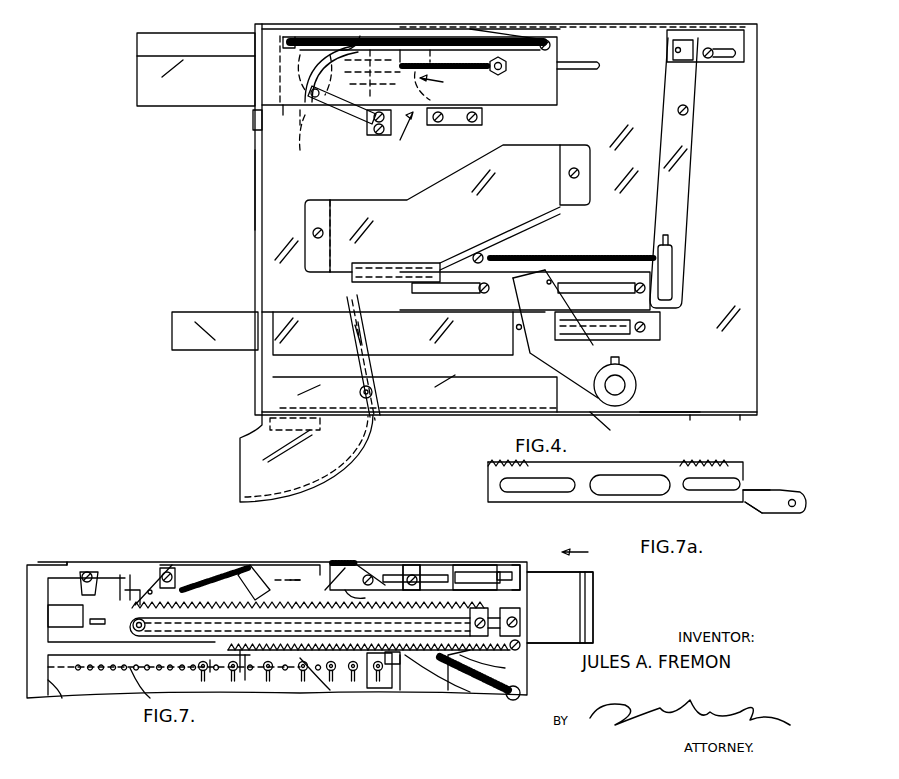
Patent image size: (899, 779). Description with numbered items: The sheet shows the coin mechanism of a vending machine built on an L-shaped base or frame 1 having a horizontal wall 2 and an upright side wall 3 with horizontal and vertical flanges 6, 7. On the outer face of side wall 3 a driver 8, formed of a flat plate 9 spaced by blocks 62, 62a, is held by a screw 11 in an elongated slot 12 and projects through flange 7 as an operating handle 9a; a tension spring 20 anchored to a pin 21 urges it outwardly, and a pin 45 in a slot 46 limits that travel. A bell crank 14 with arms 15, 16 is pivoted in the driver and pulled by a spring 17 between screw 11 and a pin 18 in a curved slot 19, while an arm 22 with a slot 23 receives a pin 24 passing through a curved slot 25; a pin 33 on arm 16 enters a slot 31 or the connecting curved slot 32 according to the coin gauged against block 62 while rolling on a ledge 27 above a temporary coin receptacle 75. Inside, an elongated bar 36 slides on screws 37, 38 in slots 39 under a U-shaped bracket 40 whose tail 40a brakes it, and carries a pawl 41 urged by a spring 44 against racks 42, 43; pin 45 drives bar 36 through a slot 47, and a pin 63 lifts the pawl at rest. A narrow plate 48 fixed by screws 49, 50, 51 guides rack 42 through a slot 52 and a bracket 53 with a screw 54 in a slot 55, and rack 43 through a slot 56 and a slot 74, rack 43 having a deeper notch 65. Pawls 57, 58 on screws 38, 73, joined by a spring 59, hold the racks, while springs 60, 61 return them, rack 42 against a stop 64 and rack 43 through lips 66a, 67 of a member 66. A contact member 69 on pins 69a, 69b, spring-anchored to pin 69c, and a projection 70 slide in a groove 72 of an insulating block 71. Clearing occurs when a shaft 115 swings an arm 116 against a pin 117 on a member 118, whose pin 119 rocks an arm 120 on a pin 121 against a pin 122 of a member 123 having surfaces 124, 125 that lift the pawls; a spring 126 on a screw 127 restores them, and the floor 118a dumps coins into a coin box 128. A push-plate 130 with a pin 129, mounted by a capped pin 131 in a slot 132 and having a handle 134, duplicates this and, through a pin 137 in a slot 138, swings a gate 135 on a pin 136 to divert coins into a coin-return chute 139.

In FIG. 4, the base or frame 1 is at (245, 182).
In FIG. 4, the horizontal wall 2 is at (652, 412).
In FIG. 4, the side wall 3 is at (752, 140).
In FIG. 4, the horizontal flange 6 is at (358, 37).
In FIG. 4, the vertical flange 7 is at (250, 70).
In FIG. 7, the vertical flange 7 is at (575, 545).
In FIG. 4, the driver 8 is at (403, 142).
In FIG. 4, the flat plate 9 is at (320, 40).
In FIG. 4, the operating handle 9a is at (157, 45).
In FIG. 7, the operating handle 9a is at (597, 600).
In FIG. 4, the screw 11 is at (507, 68).
In FIG. 4, the elongated slot 12 is at (578, 66).
In FIG. 4, the bell crank 14 is at (443, 86).
In FIG. 4, the arm 15 is at (428, 44).
In FIG. 4, the arm 16 is at (314, 73).
In FIG. 4, the tension spring 17 is at (452, 72).
In FIG. 4, the pin 18 is at (398, 44).
In FIG. 4, the curved slot 19 is at (427, 87).
In FIG. 4, the tension spring 20 is at (462, 30).
In FIG. 4, the pin 21 is at (300, 37).
In FIG. 4, the arm 22 is at (345, 108).
In FIG. 4, the elongated slot 23 is at (374, 128).
In FIG. 4, the pin 24 is at (318, 102).
In FIG. 4, the curved slot 25 is at (372, 71).
In FIG. 4, the ledge 27 is at (442, 125).
In FIG. 4, the slot 31 is at (374, 40).
In FIG. 4, the curved slot 32 is at (308, 110).
In FIG. 4, the pin 33 is at (298, 110).
In FIG. 7, the elongated bar 36 is at (385, 575).
In FIG. 7, the screw 37 is at (430, 565).
In FIG. 7, the screw 38 is at (282, 570).
In FIG. 7, the longitudinal slot 39 is at (415, 575).
In FIG. 7, the U-shaped bracket 40 is at (440, 570).
In FIG. 7, the tail-like extension 40a is at (458, 575).
In FIG. 7, the pawl 41 is at (345, 565).
In FIG. 7, the rack 42 is at (220, 650).
In FIG. 7a, the rack 43 is at (588, 500).
In FIG. 7, the rack 43 is at (135, 650).
In FIG. 7, the spring 44 is at (368, 572).
In FIG. 7, the pin 45 is at (478, 578).
In FIG. 7, the elongated slot 46 is at (520, 572).
In FIG. 7, the slot 47 is at (505, 576).
In FIG. 7, the elongated narrow plate 48 is at (195, 620).
In FIG. 7, the screw 49 is at (522, 621).
In FIG. 7, the screw 50 is at (300, 627).
In FIG. 7, the screw 51 is at (132, 632).
In FIG. 7, the elongated slot 52 is at (408, 665).
In FIG. 7, the U-shaped bracket 53 is at (490, 612).
In FIG. 7, the screw 54 is at (505, 660).
In FIG. 7, the elongated slot 55 is at (452, 665).
In FIG. 7a, the elongated slot 56 is at (497, 488).
In FIG. 7, the elongated slot 56 is at (155, 690).
In FIG. 7, the pawl 57 is at (256, 566).
In FIG. 7, the pawl 58 is at (148, 590).
In FIG. 7, the tension spring 59 is at (222, 578).
In FIG. 7, the tension spring 60 is at (365, 680).
In FIG. 7, the tension spring 61 is at (508, 700).
In FIG. 4, the spacing block 62 is at (495, 90).
In FIG. 4, the spacing block 62a is at (275, 85).
In FIG. 7, the pin 63 is at (361, 599).
In FIG. 7, the stop 64 is at (505, 615).
In FIG. 7a, the deeper notch 65 is at (722, 466).
In FIG. 7, the member 66 is at (112, 575).
In FIG. 7, the lip 66a is at (80, 617).
In FIG. 7, the lip 67 is at (158, 590).
In FIG. 7, the electrical contact member 69 is at (275, 690).
In FIG. 7, the pin 69a is at (250, 670).
In FIG. 7, the pin 69b is at (172, 648).
In FIG. 7, the pin 69c is at (522, 645).
In FIG. 7a, the projection 70 is at (756, 512).
In FIG. 7, the projection 70 is at (385, 660).
In FIG. 7, the block 71 is at (92, 688).
In FIG. 7, the longitudinal groove 72 is at (63, 690).
In FIG. 7, the screw 73 is at (178, 578).
In FIG. 7a, the slot 74 is at (745, 484).
In FIG. 4, the temporary coin receptacle 75 is at (375, 212).
In FIG. 4, the shaft 115 is at (620, 385).
In FIG. 4, the arm 116 is at (606, 430).
In FIG. 4, the pin 117 is at (552, 280).
In FIG. 4, the elongated member 118 is at (620, 265).
In FIG. 4, the sliding floor 118a is at (395, 262).
In FIG. 4, the pin 119 is at (672, 254).
In FIG. 4, the arm 120 is at (678, 188).
In FIG. 4, the pin 121 is at (689, 110).
In FIG. 4, the pin 122 is at (673, 50).
In FIG. 4, the member 123 is at (725, 30).
In FIG. 7, the member 123 is at (95, 565).
In FIG. 7, the operative surface 124 is at (248, 562).
In FIG. 7, the operative surface 125 is at (150, 565).
In FIG. 4, the tension spring 126 is at (565, 258).
In FIG. 4, the screw 127 is at (478, 252).
In FIG. 4, the coin box 128 is at (470, 410).
In FIG. 4, the pin 129 is at (516, 328).
In FIG. 4, the push-plate 130 is at (415, 350).
In FIG. 4, the capped pin 131 is at (648, 332).
In FIG. 4, the elongated slot 132 is at (622, 326).
In FIG. 4, the operating handle 134 is at (208, 318).
In FIG. 4, the movable gate 135 is at (372, 358).
In FIG. 4, the pin 136 is at (373, 392).
In FIG. 4, the pin 137 is at (366, 322).
In FIG. 4, the slot 138 is at (357, 335).
In FIG. 4, the coin-return chute 139 is at (334, 464).